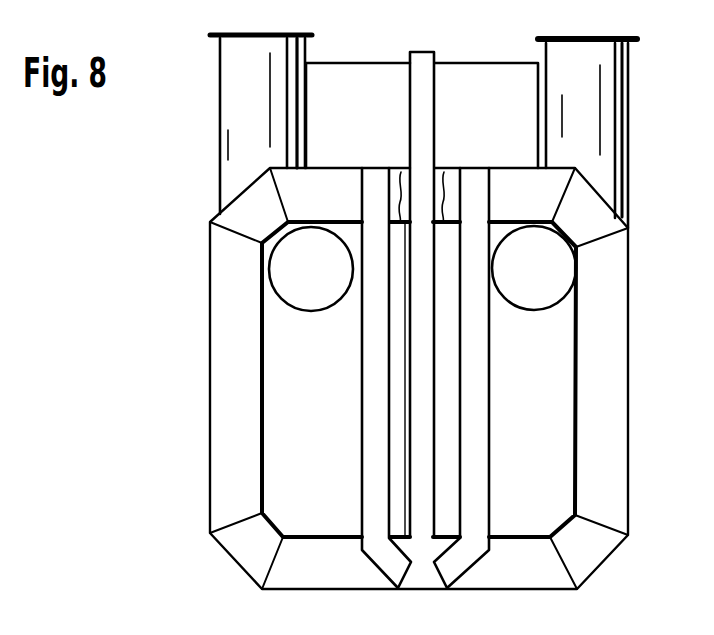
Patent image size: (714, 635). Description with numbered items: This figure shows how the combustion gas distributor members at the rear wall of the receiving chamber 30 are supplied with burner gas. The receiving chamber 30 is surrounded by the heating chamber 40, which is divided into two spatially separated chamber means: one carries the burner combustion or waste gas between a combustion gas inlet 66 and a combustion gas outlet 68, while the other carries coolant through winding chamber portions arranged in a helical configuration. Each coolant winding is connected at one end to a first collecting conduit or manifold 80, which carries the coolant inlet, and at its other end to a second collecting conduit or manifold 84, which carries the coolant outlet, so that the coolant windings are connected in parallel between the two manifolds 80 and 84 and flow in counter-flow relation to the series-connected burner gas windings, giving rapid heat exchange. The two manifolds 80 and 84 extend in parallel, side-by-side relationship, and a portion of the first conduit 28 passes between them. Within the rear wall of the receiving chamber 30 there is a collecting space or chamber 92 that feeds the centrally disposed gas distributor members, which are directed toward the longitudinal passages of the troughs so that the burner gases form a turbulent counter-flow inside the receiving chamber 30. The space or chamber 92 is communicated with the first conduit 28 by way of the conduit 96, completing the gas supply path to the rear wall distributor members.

The first conduit 28 is at (427, 59).
The receiving chamber 30 is at (328, 410).
The heating chamber 40 is at (230, 277).
The combustion gas inlet 66 is at (602, 99).
The combustion gas outlet 68 is at (232, 89).
The first collecting conduit 80 is at (352, 82).
The second collecting conduit 84 is at (519, 135).
The collecting space or chamber 92 is at (410, 352).
The conduit 96 is at (392, 198).